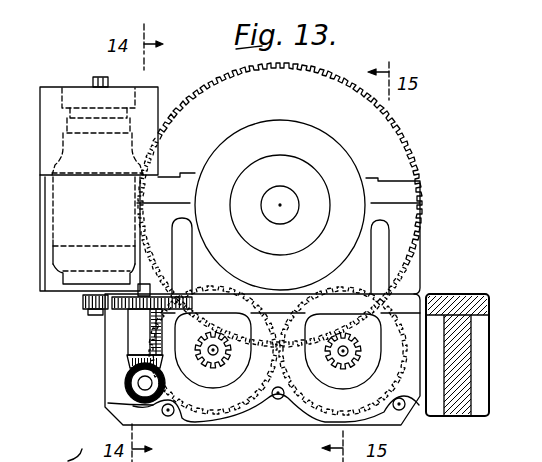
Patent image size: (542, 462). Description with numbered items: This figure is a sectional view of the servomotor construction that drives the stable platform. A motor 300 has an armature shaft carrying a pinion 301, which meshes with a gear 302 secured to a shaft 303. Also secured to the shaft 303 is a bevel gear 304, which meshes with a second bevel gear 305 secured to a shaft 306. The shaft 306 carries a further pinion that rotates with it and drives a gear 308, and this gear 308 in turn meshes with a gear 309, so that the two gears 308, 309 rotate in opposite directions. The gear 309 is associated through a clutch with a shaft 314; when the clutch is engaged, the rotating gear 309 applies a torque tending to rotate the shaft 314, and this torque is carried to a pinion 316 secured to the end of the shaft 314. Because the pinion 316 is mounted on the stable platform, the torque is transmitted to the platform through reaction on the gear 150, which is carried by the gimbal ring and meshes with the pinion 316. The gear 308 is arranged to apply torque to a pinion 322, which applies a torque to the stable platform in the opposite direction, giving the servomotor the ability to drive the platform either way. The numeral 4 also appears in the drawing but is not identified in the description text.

The frame 4 is at (4, 365).
The gear 150 is at (431, 189).
The motor 300 is at (73, 155).
The pinion 301 is at (82, 303).
The gear 302 is at (122, 310).
The shaft 303 is at (150, 288).
The bevel gear 304 is at (127, 364).
The bevel gear 305 is at (133, 406).
The shaft 306 is at (125, 385).
The gear 308 is at (212, 403).
The gear 309 is at (314, 394).
The shaft 314 is at (333, 362).
The pinion 316 is at (341, 338).
The pinion 322 is at (196, 358).